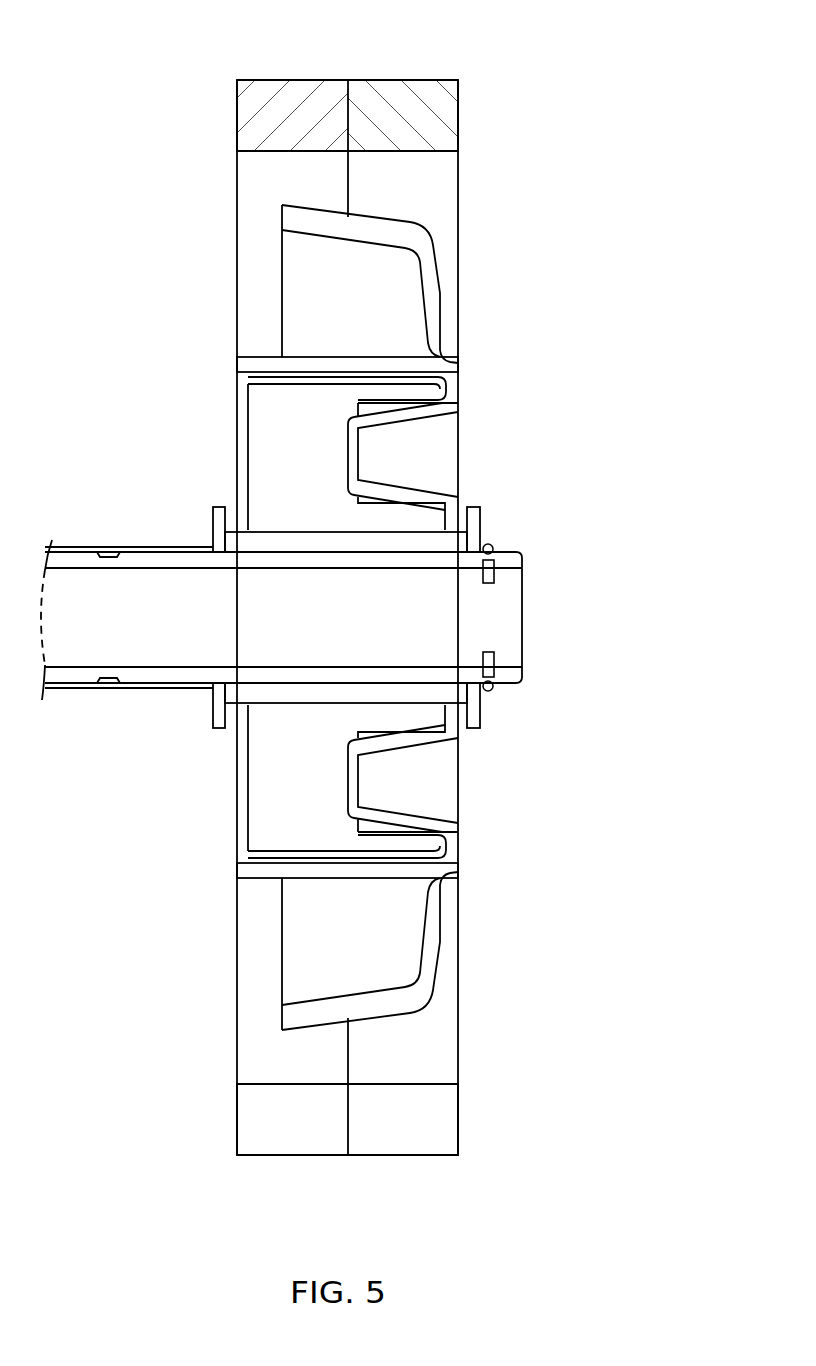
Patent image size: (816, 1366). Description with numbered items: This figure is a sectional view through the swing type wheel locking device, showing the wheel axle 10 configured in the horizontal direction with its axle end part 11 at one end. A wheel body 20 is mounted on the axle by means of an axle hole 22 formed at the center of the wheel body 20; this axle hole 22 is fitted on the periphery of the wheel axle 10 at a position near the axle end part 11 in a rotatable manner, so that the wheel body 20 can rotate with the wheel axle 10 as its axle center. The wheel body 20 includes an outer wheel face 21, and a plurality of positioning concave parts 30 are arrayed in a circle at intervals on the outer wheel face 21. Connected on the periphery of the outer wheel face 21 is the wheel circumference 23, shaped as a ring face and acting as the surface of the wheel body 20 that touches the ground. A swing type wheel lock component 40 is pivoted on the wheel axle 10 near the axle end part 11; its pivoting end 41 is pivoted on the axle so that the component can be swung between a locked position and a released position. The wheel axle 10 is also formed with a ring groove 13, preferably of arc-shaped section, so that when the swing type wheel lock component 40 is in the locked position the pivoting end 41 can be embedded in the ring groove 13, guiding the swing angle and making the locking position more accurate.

The wheel axle 10 is at (158, 538).
The axle end part 11 is at (523, 583).
The ring groove 13 is at (490, 690).
The wheel body 20 is at (217, 252).
The outer wheel face 21 is at (458, 848).
The axle hole 22 is at (300, 552).
The wheel circumference 23 is at (425, 80).
The positioning concave parts 30 is at (358, 453).
The swing type wheel lock component 40 is at (497, 542).
The pivoting end 41 is at (490, 583).